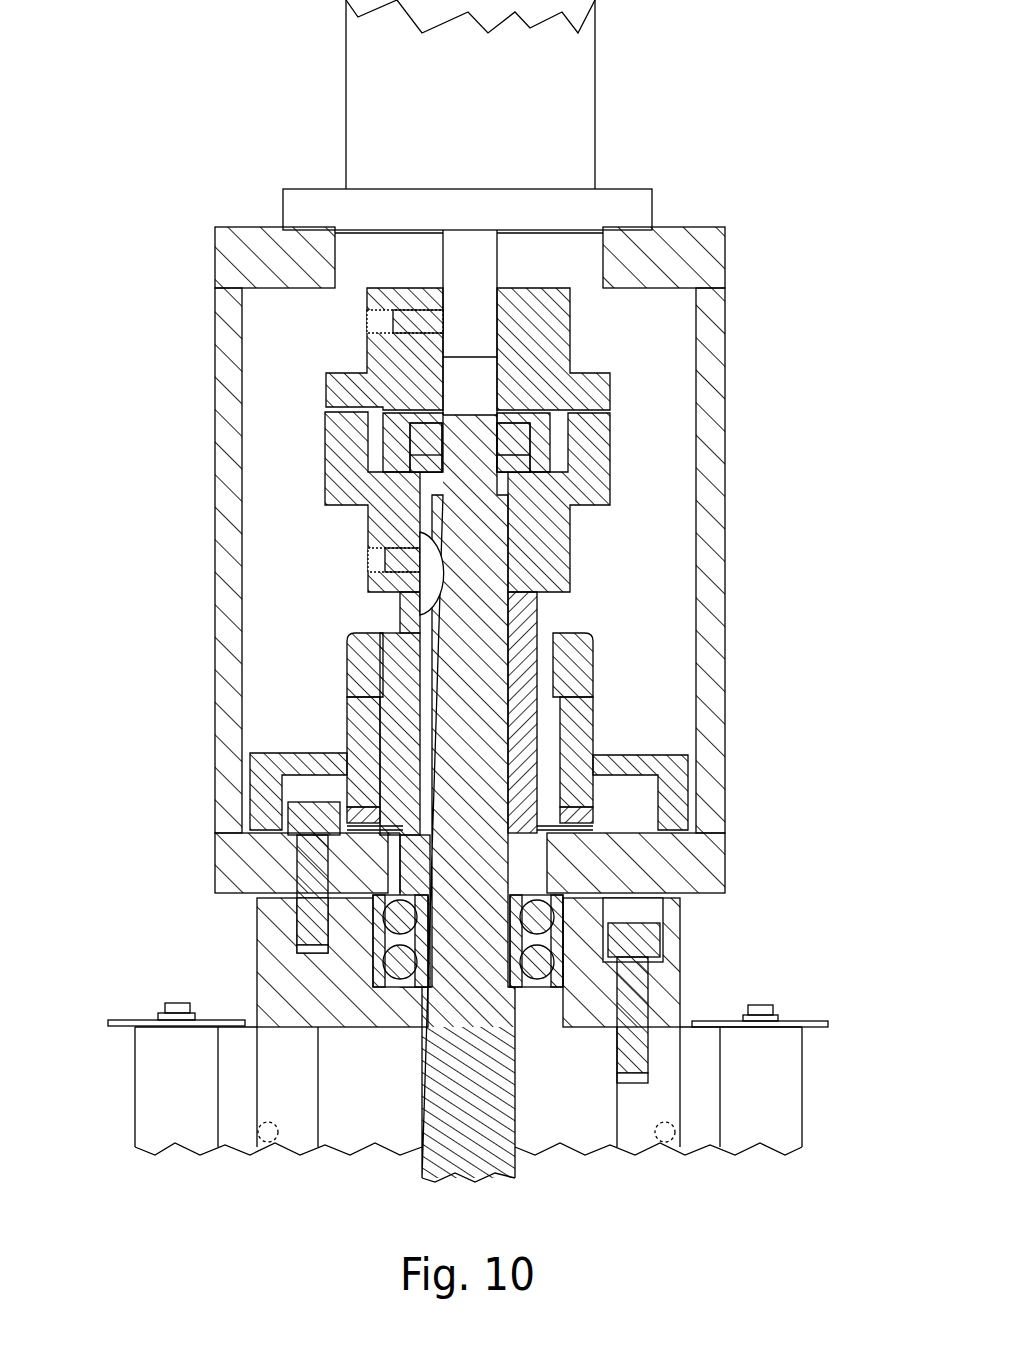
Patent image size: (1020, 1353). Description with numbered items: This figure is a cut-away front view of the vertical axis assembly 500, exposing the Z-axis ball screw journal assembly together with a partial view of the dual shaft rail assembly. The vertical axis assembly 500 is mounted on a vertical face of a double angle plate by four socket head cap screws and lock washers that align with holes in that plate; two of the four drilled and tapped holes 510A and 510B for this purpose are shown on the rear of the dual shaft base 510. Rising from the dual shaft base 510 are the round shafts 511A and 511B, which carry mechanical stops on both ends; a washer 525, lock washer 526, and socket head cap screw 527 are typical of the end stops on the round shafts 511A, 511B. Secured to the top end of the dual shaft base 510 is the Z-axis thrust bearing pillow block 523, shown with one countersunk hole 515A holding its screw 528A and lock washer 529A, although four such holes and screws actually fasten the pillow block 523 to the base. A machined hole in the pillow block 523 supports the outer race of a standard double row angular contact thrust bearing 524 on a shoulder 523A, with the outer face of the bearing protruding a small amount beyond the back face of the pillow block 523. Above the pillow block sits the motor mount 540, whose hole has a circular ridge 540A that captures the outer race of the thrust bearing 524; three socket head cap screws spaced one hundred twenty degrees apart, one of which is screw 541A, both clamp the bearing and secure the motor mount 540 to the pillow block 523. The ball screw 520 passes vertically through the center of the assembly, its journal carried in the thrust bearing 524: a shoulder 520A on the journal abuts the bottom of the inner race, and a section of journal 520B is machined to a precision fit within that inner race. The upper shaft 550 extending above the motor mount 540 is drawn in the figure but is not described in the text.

The vertical axis assembly 500 is at (140, 256).
The motor shaft 550 is at (555, 122).
The motor mount 540 is at (718, 469).
The circular ridge 540A is at (560, 895).
The socket head cap screw 541A is at (307, 850).
The ball screw 520 is at (473, 630).
The shoulder 520A is at (515, 1028).
The section of journal 520B is at (565, 777).
The Z-axis thrust bearing pillow block 523 is at (263, 952).
The shoulder 523A is at (390, 990).
The thrust bearing 524 is at (377, 948).
The countersunk hole 515A is at (647, 912).
The lock washer 529A is at (675, 956).
The screw 528A is at (640, 995).
The washer 525 is at (122, 1018).
The lock washer 526 is at (162, 1014).
The socket head cap screw 527 is at (170, 1003).
The round shaft 511A is at (160, 1085).
The round shaft 511B is at (772, 1108).
The dual shaft base 510 is at (362, 1135).
The drilled and tapped hole 510A is at (283, 1107).
The drilled and tapped hole 510B is at (660, 1128).